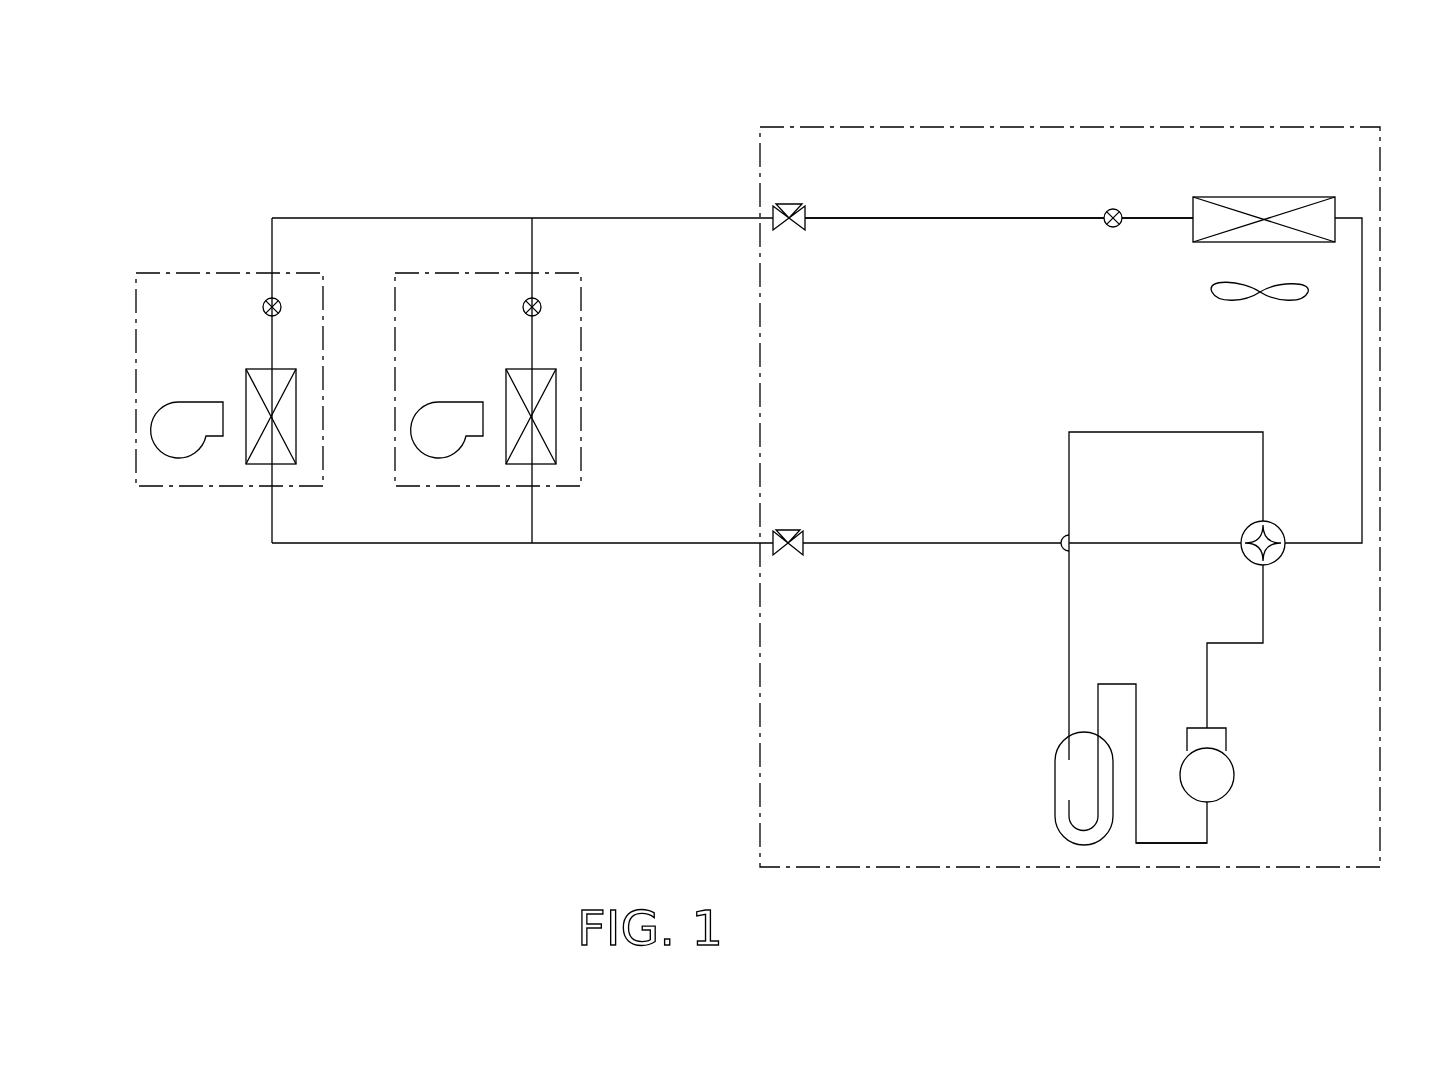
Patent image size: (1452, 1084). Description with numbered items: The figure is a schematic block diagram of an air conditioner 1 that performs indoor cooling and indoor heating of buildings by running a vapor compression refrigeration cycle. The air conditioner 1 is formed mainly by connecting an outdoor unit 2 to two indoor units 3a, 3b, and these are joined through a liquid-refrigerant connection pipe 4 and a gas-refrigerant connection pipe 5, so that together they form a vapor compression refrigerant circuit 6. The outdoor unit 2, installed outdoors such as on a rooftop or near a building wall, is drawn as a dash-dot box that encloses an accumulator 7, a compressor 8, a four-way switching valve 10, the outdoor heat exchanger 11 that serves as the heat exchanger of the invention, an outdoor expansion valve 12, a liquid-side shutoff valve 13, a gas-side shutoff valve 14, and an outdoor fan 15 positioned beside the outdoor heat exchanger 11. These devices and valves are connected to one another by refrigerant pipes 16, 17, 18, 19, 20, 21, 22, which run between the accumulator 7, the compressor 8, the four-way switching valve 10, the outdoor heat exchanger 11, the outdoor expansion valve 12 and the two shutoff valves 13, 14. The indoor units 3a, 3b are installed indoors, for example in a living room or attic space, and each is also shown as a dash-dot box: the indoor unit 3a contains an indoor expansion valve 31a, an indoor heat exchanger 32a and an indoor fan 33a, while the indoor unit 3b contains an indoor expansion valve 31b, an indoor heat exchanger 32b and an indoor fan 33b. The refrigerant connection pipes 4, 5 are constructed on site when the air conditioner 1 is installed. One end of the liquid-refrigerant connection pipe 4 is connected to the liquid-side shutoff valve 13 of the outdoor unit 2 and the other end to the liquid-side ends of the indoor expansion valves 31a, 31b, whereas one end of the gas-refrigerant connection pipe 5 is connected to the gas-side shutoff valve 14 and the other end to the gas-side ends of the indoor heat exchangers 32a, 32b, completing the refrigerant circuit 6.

The air conditioner 1 is at (1372, 118).
The outdoor unit 2 is at (1310, 127).
The indoor unit 3a is at (323, 305).
The indoor unit 3b is at (583, 305).
The liquid-refrigerant connection pipe 4 is at (620, 217).
The gas-refrigerant connection pipe 5 is at (620, 543).
The vapor compression refrigerant circuit 6 is at (685, 194).
The accumulator 7 is at (1052, 783).
The compressor 8 is at (1193, 728).
The four-way switching valve 10 is at (1280, 527).
The outdoor heat exchanger 11 is at (1265, 197).
The outdoor expansion valve 12 is at (1115, 208).
The liquid-side shutoff valve 13 is at (795, 231).
The gas-side shutoff valve 14 is at (793, 556).
The outdoor fan 15 is at (1228, 300).
The refrigerant pipe 16 is at (1068, 636).
The refrigerant pipe 17 is at (1208, 825).
The refrigerant pipe 18 is at (1263, 590).
The refrigerant pipe 19 is at (1362, 412).
The refrigerant pipe 20 is at (1158, 222).
The refrigerant pipe 21 is at (952, 220).
The refrigerant pipe 22 is at (1022, 545).
The indoor expansion valve 31a is at (262, 307).
The indoor expansion valve 31b is at (522, 307).
The indoor heat exchanger 32a is at (297, 415).
The indoor heat exchanger 32b is at (557, 415).
The indoor fan 33a is at (205, 401).
The indoor fan 33b is at (465, 401).